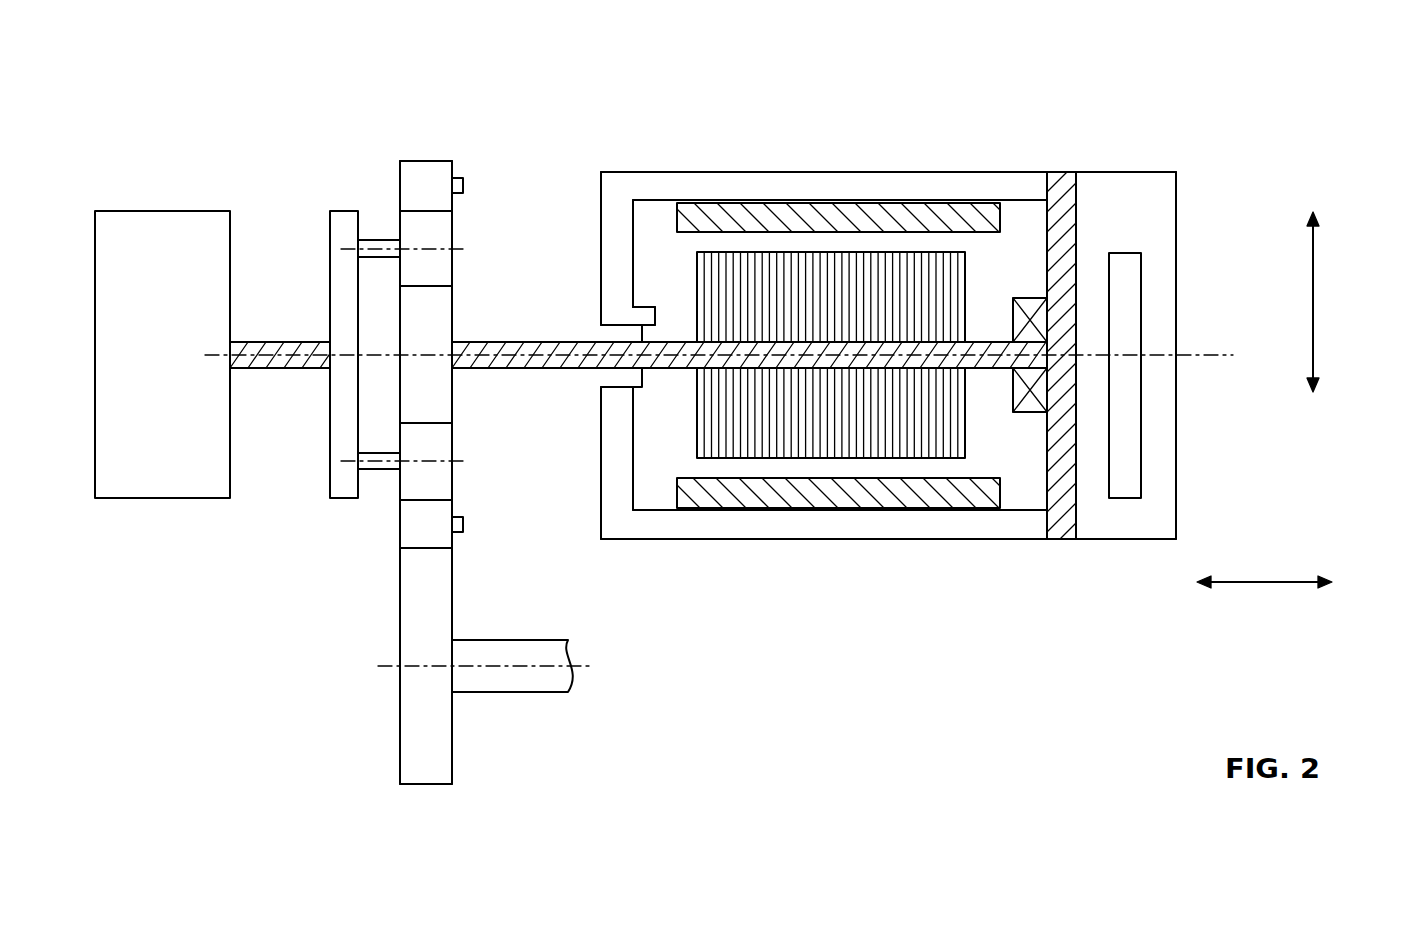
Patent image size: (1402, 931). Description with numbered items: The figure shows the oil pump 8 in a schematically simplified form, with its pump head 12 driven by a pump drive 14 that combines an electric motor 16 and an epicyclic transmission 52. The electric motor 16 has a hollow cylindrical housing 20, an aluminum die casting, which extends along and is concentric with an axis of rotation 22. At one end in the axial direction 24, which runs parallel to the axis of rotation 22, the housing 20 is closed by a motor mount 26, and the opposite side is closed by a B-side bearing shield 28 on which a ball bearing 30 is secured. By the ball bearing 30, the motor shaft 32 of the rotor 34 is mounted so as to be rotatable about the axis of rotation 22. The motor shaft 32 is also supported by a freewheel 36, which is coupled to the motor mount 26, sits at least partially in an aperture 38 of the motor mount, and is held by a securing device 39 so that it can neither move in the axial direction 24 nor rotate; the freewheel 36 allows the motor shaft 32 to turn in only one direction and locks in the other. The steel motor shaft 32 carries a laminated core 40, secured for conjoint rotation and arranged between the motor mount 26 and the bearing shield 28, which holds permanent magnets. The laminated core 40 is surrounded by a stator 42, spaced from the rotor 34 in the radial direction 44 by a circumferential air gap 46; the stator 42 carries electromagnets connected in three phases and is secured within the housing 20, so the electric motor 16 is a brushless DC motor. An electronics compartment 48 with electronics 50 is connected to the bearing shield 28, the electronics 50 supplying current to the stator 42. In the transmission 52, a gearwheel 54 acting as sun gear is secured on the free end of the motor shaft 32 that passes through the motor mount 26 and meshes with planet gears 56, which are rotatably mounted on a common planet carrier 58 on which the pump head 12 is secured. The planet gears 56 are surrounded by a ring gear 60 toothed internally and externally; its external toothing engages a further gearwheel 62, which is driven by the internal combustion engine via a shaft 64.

The oil pump 8 is at (66, 200).
The pump head 12 is at (171, 373).
The pump drive 14 is at (251, 642).
The electric motor 16 is at (983, 170).
The housing 20 is at (897, 543).
The axis of rotation 22 is at (1222, 355).
The axial direction 24 is at (1265, 583).
The motor mount 26 is at (610, 257).
The B-side bearing shield 28 is at (1060, 193).
The ball bearing 30 is at (1038, 388).
The motor shaft 32 is at (831, 273).
The rotor 34 is at (895, 359).
The freewheel 36 is at (605, 377).
The aperture 38 is at (608, 327).
The securing device 39 is at (642, 313).
The laminated core 40 is at (782, 425).
The stator 42 is at (750, 220).
The radial direction 44 is at (1313, 305).
The air gap 46 is at (897, 242).
The electronics compartment 48 is at (1163, 223).
The electronics 50 is at (1127, 472).
The transmission 52 is at (373, 178).
The gearwheel 54 is at (440, 390).
The planet gears 56 is at (440, 260).
The planet carrier 58 is at (338, 407).
The ring gear 60 is at (440, 198).
The further gearwheel 62 is at (413, 700).
The shaft 64 is at (505, 680).